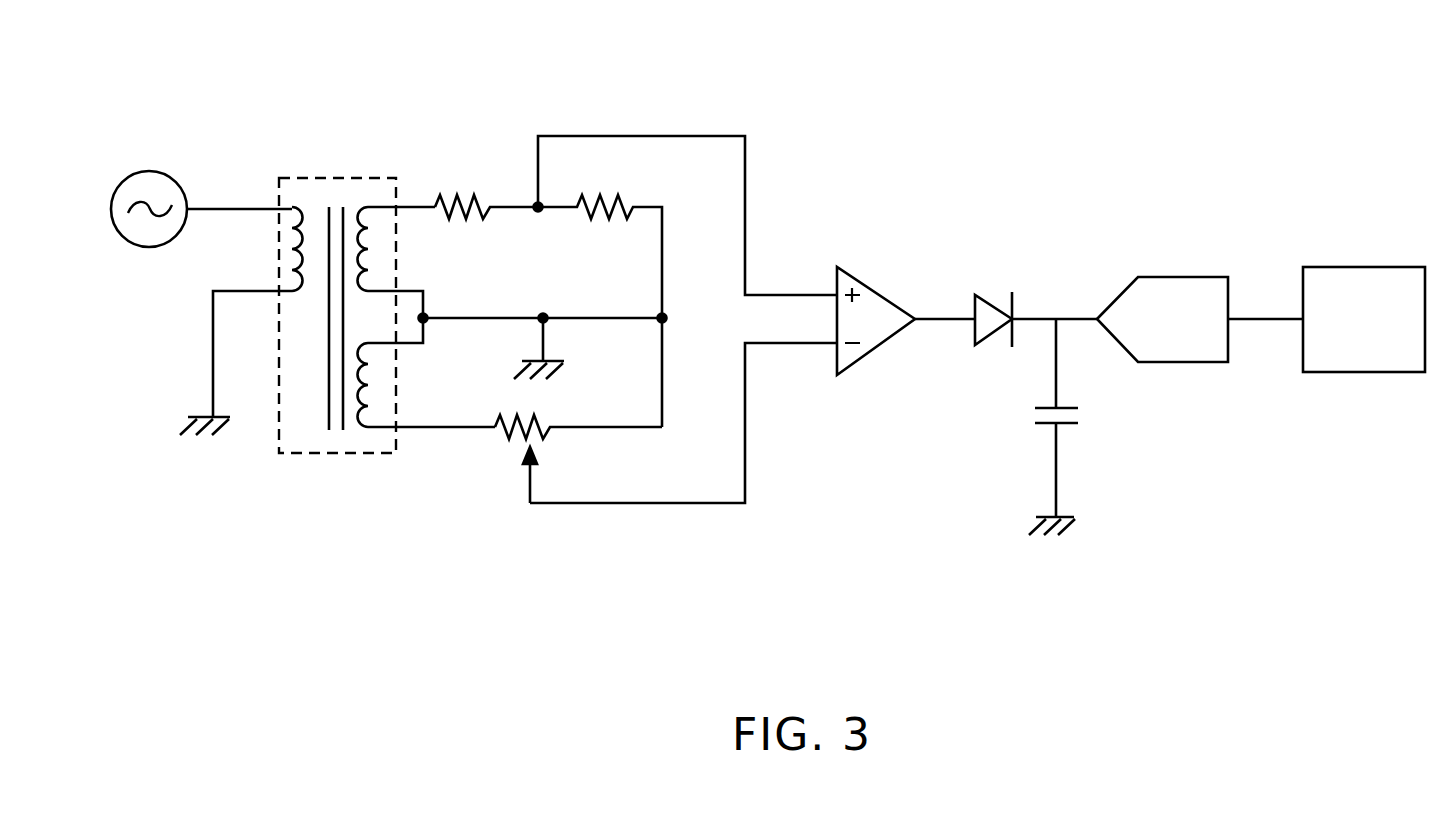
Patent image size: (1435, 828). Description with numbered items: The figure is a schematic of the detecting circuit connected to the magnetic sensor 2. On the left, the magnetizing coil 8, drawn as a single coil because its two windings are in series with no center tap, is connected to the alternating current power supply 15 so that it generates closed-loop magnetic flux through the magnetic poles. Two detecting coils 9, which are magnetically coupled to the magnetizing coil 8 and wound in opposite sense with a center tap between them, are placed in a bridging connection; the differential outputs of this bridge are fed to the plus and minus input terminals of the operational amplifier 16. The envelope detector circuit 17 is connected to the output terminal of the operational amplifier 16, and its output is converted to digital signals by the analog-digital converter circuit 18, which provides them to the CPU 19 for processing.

The magnetic sensor 2 is at (287, 453).
The magnetizing coil 8 is at (291, 205).
The detecting coil 9 is at (367, 205).
The alternating current power supply 15 is at (163, 170).
The operational amplifier 16 is at (850, 213).
The envelope detector circuit 17 is at (1065, 289).
The analog-digital converter circuit 18 is at (1180, 350).
The CPU 19 is at (1388, 358).